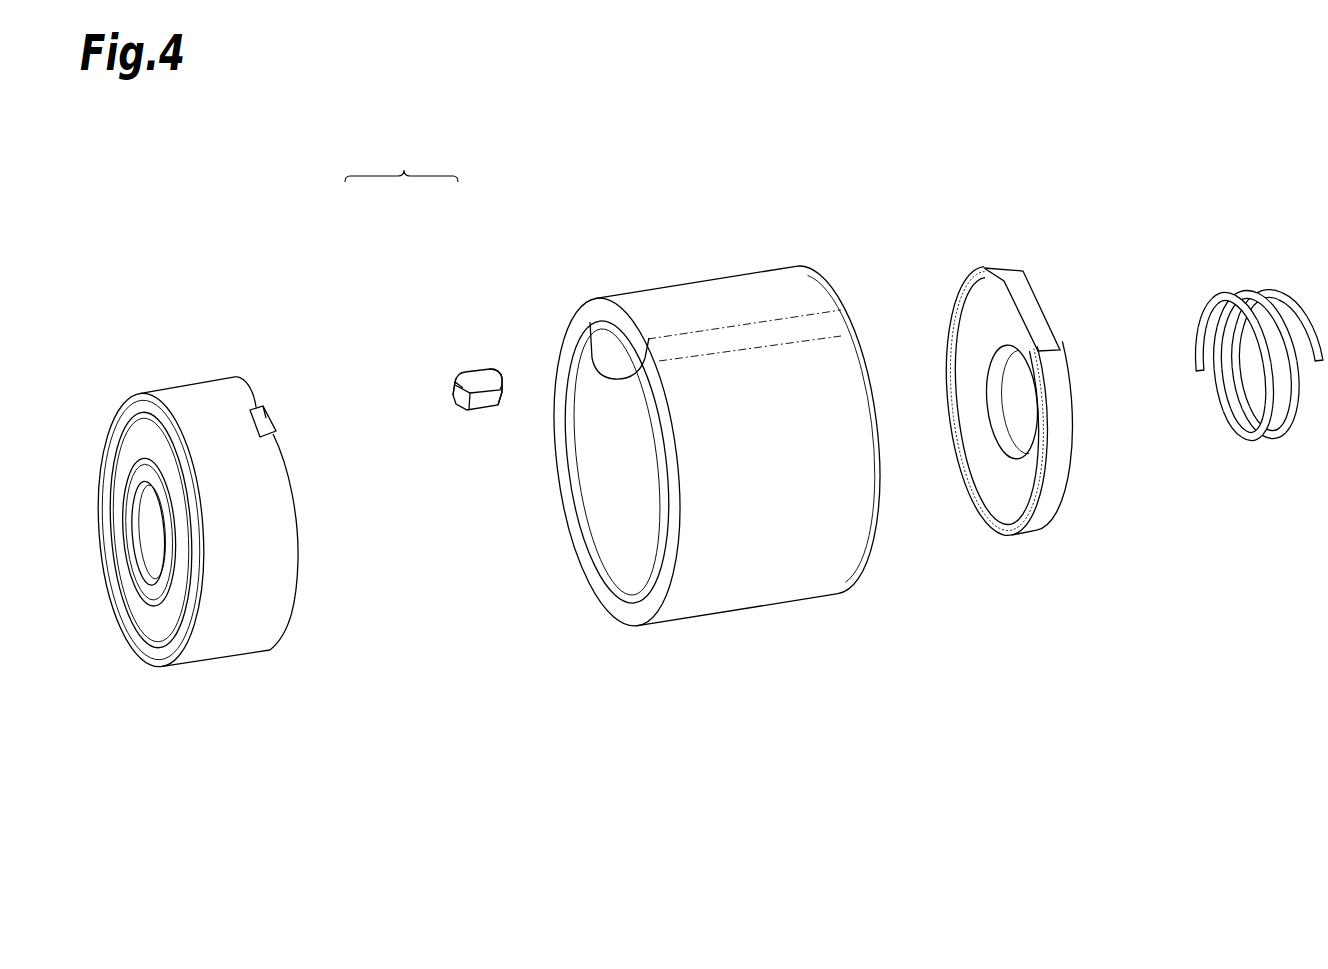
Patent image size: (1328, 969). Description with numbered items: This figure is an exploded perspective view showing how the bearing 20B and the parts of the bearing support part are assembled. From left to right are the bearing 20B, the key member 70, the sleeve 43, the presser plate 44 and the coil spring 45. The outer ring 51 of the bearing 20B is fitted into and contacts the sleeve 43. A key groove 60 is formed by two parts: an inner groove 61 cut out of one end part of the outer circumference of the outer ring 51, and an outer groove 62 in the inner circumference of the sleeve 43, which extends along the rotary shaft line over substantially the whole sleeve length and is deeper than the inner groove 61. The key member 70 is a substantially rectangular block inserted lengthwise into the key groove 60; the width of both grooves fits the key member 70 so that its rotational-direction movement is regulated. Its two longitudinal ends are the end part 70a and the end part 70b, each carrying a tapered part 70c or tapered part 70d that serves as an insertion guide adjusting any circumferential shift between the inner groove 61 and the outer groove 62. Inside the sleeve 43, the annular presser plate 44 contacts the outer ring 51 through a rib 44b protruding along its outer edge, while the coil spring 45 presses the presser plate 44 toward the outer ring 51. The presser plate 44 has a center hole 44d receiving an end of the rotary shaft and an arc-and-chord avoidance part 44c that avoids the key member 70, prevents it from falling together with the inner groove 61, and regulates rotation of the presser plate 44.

The bearing 20B is at (230, 425).
The outer ring 51 is at (211, 384).
The key groove 60 is at (401, 159).
The inner groove 61 is at (266, 405).
The outer groove 62 is at (634, 343).
The key member 70 is at (470, 384).
The end part 70a is at (501, 372).
The end part 70b is at (456, 393).
The tapered part 70c is at (502, 406).
The tapered part 70d is at (465, 409).
The sleeve 43 is at (653, 406).
The presser plate 44 is at (1038, 402).
The rib 44b is at (1004, 541).
The avoidance part 44c is at (1027, 295).
The center hole 44d is at (1001, 437).
The coil spring 45 is at (1247, 282).